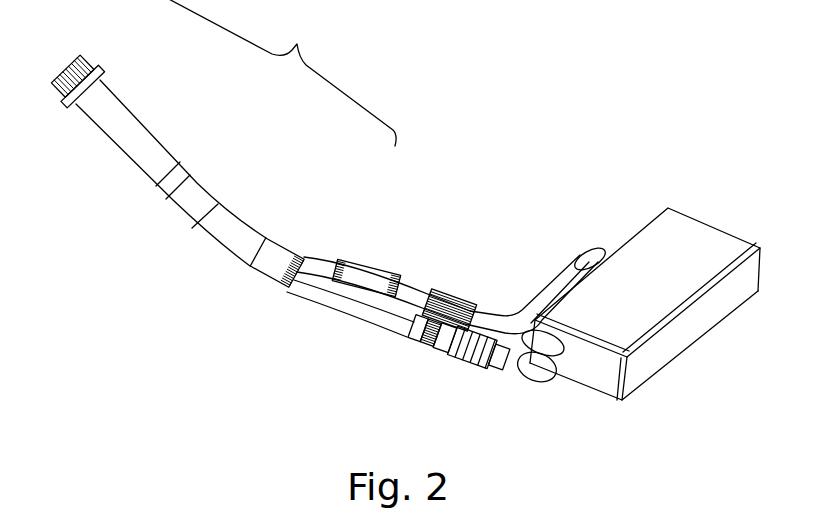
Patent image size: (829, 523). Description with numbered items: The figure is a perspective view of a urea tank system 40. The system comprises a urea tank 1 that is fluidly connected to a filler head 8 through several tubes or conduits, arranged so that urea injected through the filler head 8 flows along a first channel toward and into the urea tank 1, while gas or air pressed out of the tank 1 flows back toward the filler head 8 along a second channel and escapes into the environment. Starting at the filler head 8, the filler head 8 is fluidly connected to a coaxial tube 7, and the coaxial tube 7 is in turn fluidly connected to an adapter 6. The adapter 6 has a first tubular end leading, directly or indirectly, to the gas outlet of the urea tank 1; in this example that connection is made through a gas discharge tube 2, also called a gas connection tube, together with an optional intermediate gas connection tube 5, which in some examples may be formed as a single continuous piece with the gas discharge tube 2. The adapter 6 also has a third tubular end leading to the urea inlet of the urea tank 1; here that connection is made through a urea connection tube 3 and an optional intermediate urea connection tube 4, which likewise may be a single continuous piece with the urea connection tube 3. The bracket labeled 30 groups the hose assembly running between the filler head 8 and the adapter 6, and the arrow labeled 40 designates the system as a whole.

The urea tank 1 is at (684, 229).
The gas discharge tube 2 is at (514, 314).
The urea connection tube 3 is at (497, 374).
The intermediate urea connection tube 4 is at (384, 317).
The intermediate gas connection tube 5 is at (380, 276).
The adapter 6 is at (313, 281).
The coaxial tube 7 is at (200, 181).
The filler head 8 is at (90, 66).
The hose assembly 30 is at (280, 73).
The urea tank system 40 is at (269, 378).